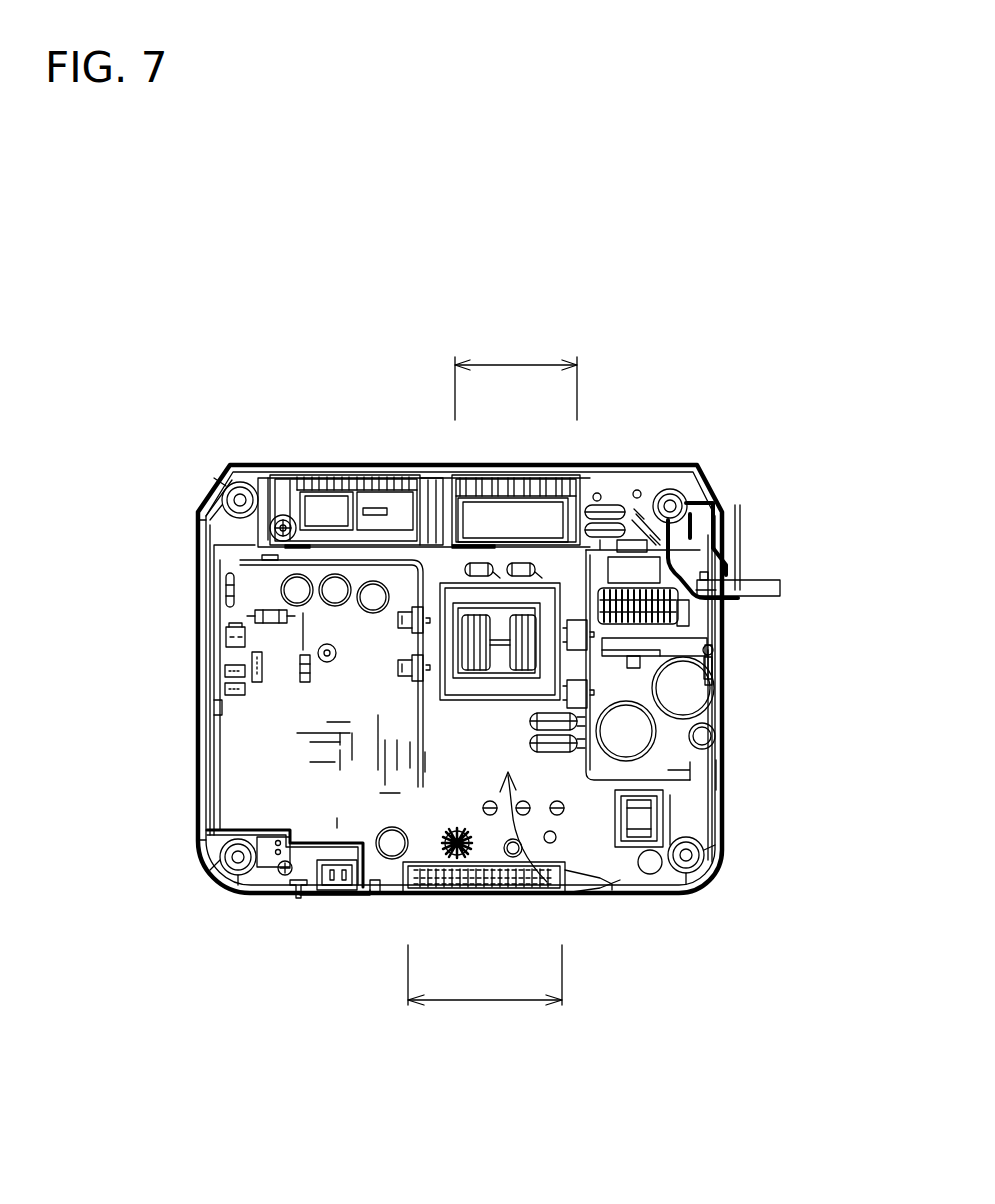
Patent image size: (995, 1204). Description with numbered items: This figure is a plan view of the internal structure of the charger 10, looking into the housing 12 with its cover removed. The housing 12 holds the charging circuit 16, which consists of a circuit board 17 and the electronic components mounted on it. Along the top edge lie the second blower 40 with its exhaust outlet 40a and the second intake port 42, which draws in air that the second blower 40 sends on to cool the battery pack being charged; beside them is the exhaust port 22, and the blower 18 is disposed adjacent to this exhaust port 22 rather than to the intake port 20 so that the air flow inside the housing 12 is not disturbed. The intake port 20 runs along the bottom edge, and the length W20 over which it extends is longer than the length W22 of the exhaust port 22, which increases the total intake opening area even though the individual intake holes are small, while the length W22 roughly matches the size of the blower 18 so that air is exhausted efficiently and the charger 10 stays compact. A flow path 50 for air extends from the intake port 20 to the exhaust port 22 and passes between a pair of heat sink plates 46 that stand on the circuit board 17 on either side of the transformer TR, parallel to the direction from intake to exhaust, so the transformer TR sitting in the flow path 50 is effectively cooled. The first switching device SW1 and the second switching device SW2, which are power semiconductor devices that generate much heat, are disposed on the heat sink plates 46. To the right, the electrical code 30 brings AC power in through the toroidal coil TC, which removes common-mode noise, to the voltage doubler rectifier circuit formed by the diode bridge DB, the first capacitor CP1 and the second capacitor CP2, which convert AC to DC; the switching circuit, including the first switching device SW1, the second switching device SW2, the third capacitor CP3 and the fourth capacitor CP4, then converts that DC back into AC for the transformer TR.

The charger 10 is at (731, 407).
The housing 12 is at (735, 540).
The charging circuit 16 is at (246, 792).
The circuit board 17 is at (222, 748).
The blower 18 is at (580, 548).
The intake port 20 is at (405, 905).
The exhaust port 22 is at (578, 464).
The electrical code 30 is at (768, 582).
The second blower 40 is at (437, 465).
The exhaust outlet 40a is at (292, 465).
The second intake port 42 is at (300, 464).
The heat sink plates 46 is at (700, 642).
The flow path 50 is at (567, 895).
The length over which the intake port is provided W20 is at (485, 990).
The length over which the exhaust port is provided W22 is at (516, 376).
The transformer TR is at (550, 598).
The toroidal coil TC is at (690, 607).
The diode bridge DB is at (705, 665).
The first capacitor CP1 is at (640, 723).
The second capacitor CP2 is at (688, 703).
The third capacitor CP3 is at (693, 735).
The fourth capacitor CP4 is at (600, 730).
The first switching device SW1 is at (397, 613).
The second switching device SW2 is at (397, 662).